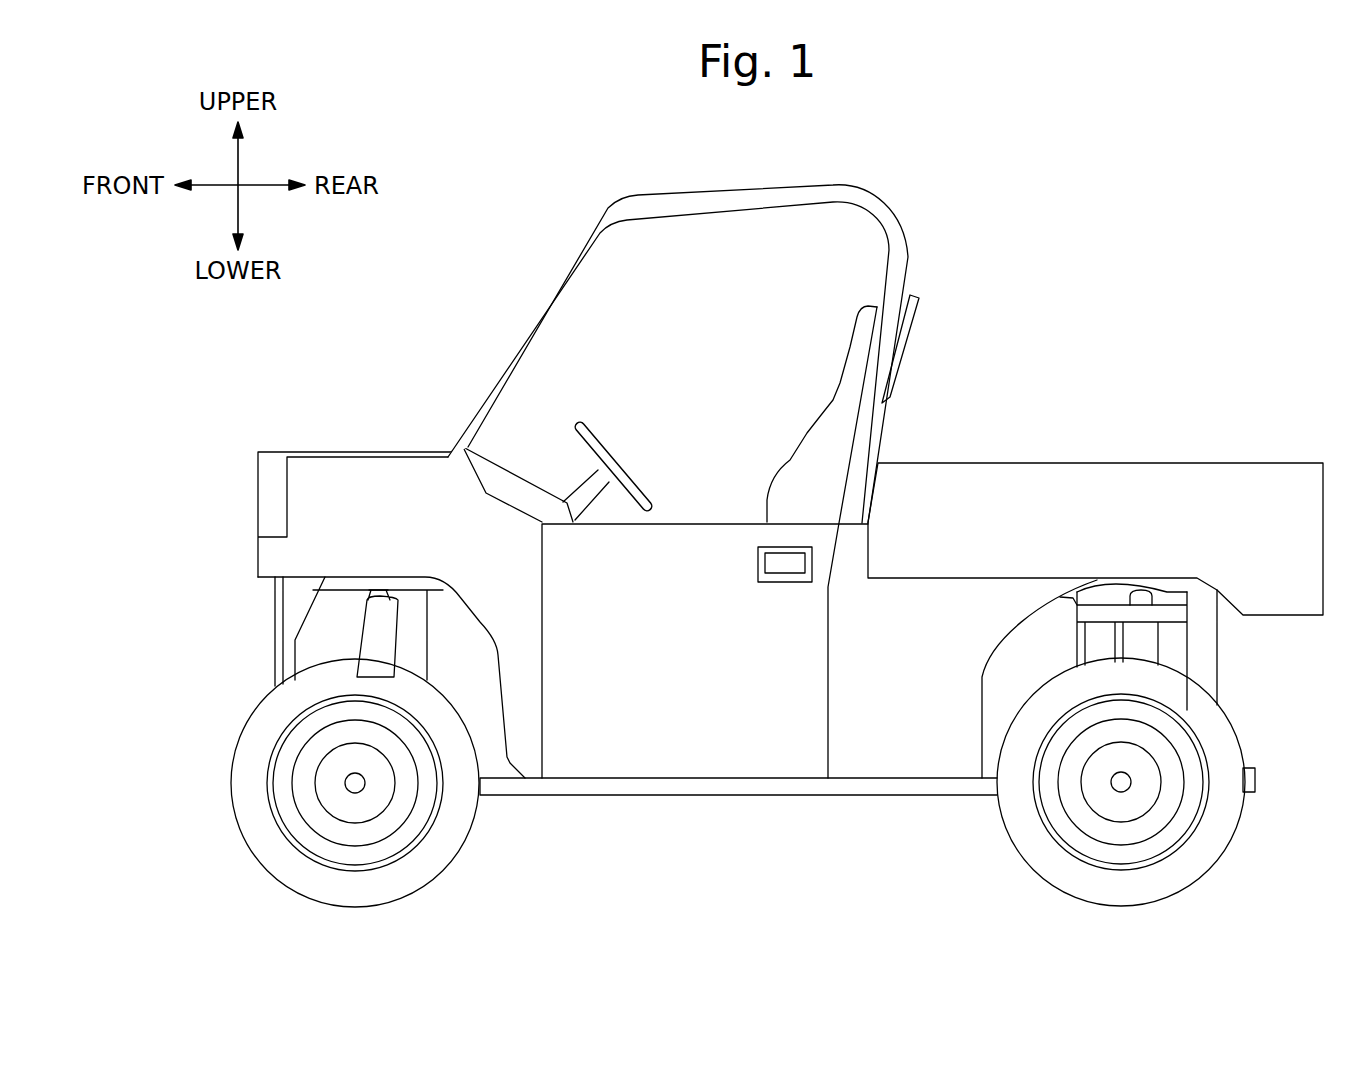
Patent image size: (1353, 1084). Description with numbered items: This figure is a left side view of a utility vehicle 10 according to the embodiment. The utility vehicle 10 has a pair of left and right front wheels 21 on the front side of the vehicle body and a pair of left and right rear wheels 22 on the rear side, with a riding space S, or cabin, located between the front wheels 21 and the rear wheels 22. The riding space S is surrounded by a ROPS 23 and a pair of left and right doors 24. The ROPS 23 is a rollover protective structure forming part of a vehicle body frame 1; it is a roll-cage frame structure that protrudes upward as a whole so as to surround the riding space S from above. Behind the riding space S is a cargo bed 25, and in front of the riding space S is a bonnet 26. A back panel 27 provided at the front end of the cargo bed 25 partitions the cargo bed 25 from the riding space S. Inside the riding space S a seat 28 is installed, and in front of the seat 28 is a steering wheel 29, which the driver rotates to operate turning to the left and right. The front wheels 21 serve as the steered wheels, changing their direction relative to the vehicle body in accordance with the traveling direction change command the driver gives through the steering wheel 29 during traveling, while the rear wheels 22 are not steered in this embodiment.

The vehicle body frame 1 is at (905, 162).
The utility vehicle 10 is at (1160, 162).
The front wheels 21 is at (343, 888).
The rear wheels 22 is at (1137, 888).
The ROPS 23 is at (648, 207).
The doors 24 is at (650, 572).
The cargo bed 25 is at (1037, 470).
The bonnet 26 is at (328, 452).
The back panel 27 is at (905, 321).
The seat 28 is at (808, 472).
The steering wheel 29 is at (573, 418).
The riding space S is at (673, 375).